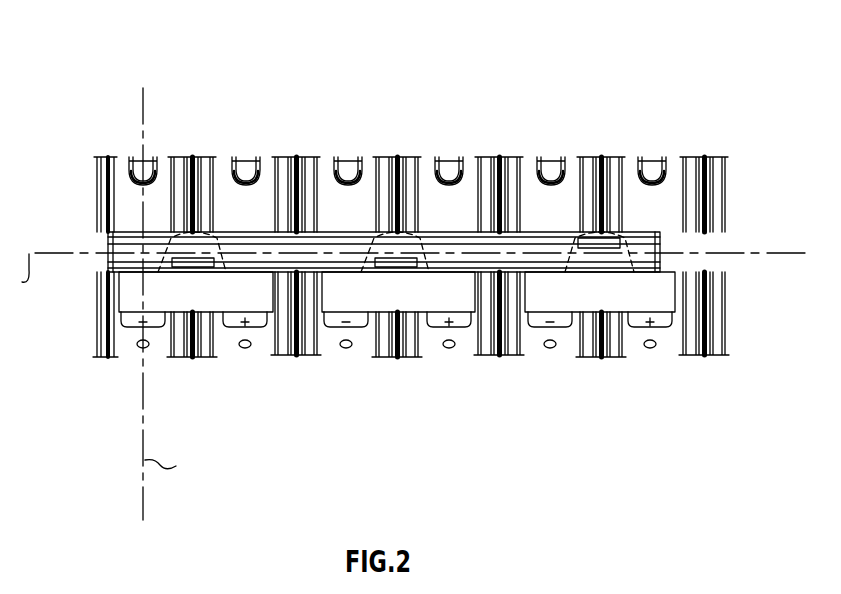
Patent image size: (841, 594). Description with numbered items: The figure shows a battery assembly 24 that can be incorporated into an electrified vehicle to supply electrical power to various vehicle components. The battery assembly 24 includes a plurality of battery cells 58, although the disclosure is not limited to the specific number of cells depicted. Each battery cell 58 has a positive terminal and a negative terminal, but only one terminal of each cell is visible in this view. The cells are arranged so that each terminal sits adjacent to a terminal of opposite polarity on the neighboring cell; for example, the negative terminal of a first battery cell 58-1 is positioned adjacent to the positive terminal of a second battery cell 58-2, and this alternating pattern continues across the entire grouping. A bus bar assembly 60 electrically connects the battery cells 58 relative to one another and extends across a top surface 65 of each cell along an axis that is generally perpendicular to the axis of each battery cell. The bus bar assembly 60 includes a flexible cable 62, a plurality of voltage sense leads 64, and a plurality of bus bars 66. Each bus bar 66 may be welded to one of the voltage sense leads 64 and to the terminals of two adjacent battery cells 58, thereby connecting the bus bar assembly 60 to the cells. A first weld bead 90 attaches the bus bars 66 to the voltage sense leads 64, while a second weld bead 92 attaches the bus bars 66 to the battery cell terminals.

The battery assembly 24 is at (407, 269).
The battery cell 58 is at (221, 175).
The first battery cell 58-1 is at (126, 352).
The second battery cell 58-2 is at (233, 358).
The bus bar assembly 60 is at (464, 224).
The flexible cable 62 is at (300, 233).
The voltage sense lead 64 is at (519, 250).
The top surface 65 is at (156, 210).
The bus bar 66 is at (190, 296).
The first weld bead 90 is at (191, 262).
The second weld bead 92 is at (148, 308).